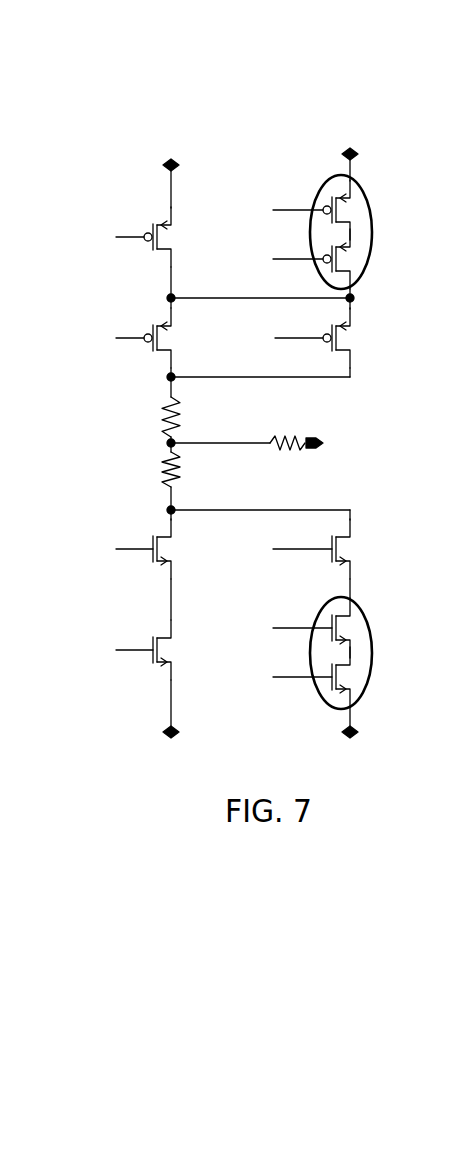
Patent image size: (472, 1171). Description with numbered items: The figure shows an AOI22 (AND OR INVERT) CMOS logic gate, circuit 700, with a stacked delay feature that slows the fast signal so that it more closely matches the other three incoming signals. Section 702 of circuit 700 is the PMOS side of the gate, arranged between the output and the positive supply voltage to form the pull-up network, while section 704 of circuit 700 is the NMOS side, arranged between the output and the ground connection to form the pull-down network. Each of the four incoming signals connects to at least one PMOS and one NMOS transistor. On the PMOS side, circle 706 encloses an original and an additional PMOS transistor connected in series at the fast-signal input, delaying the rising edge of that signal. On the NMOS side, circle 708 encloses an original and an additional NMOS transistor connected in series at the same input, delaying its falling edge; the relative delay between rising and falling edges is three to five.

The circuit 700 is at (194, 389).
The section 702 is at (193, 287).
The section 704 is at (194, 606).
The circle 706 is at (309, 222).
The circle 708 is at (309, 668).